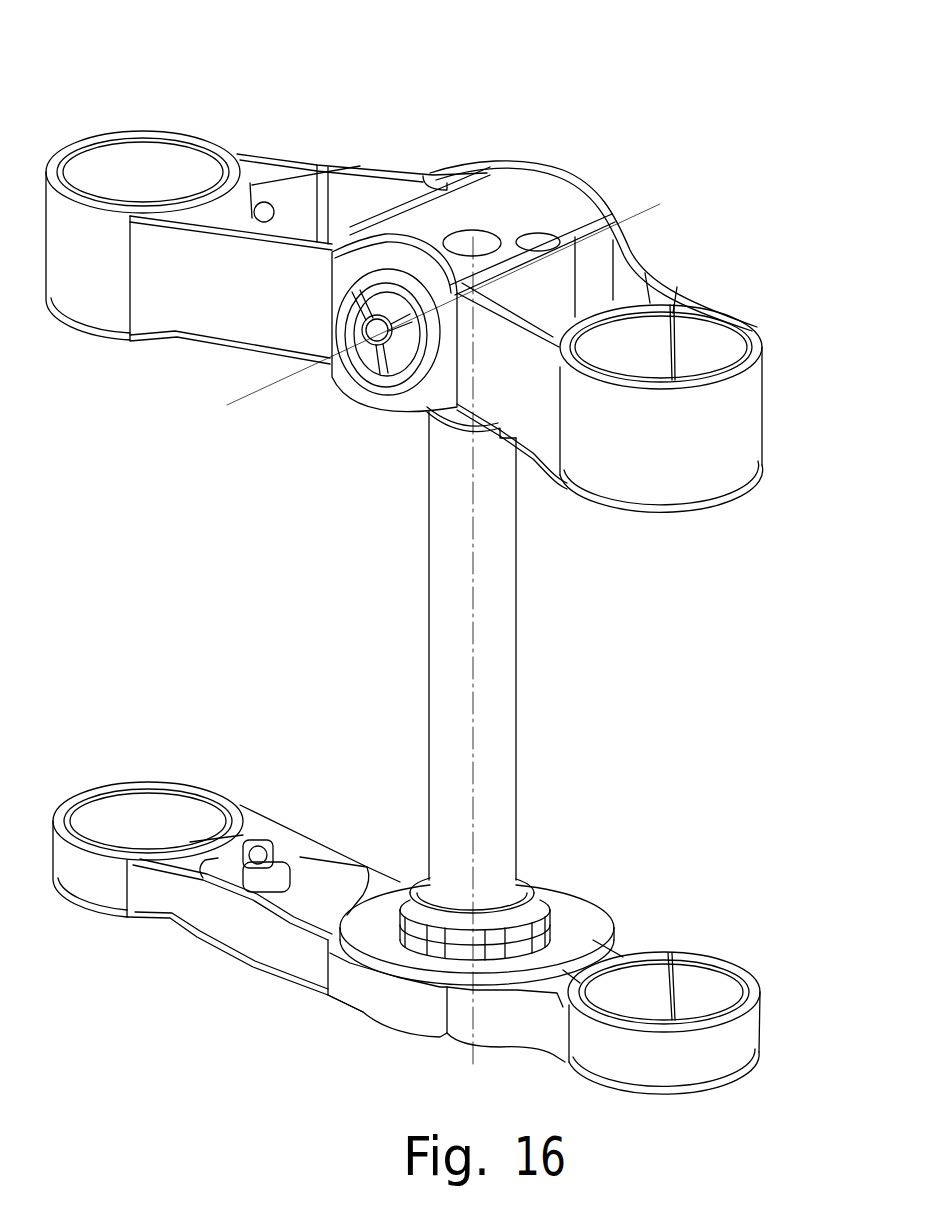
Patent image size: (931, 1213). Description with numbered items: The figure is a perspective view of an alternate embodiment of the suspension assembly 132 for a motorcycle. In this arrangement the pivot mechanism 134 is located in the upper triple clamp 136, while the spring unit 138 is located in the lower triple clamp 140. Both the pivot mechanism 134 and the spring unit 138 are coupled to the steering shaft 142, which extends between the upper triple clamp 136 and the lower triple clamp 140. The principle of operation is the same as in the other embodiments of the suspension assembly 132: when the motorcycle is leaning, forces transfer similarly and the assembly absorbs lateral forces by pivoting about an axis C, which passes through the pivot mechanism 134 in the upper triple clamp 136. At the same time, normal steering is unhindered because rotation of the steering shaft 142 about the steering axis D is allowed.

The suspension assembly 132 is at (703, 143).
The pivot mechanism 134 is at (378, 340).
The upper triple clamp 136 is at (623, 280).
The spring unit 138 is at (583, 920).
The lower triple clamp 140 is at (297, 907).
The steering shaft 142 is at (510, 650).
The axis C is at (270, 383).
The steering axis D is at (473, 677).